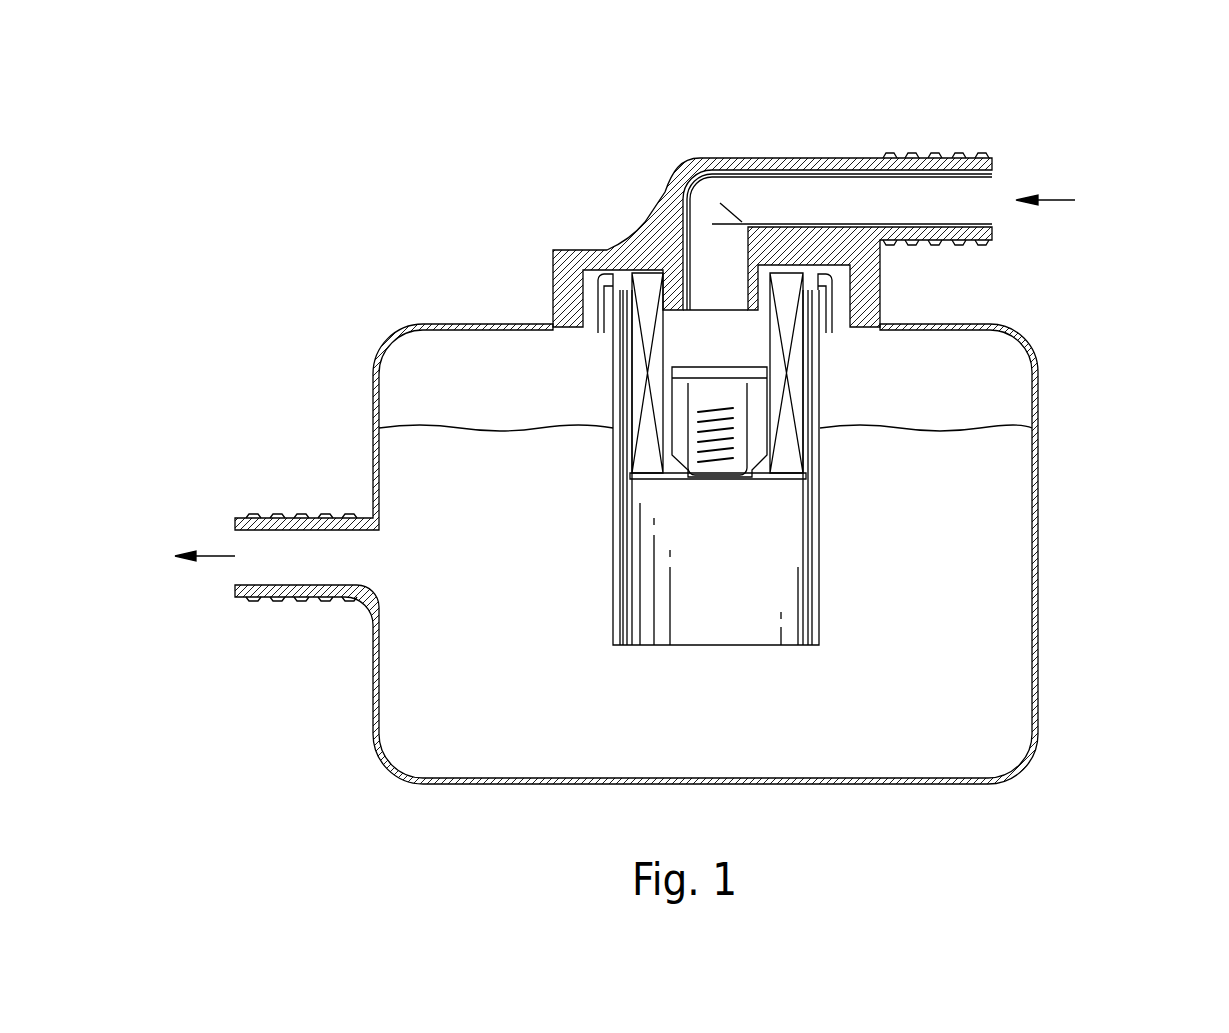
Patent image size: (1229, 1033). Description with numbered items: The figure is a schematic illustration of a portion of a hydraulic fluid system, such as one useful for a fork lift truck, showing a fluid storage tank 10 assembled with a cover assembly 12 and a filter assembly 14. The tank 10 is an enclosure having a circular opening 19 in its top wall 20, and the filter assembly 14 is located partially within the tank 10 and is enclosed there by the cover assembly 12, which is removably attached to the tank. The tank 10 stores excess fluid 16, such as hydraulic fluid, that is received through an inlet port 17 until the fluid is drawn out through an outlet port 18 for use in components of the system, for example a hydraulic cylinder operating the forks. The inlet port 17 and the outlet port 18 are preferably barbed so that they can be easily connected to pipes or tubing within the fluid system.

The fluid storage tank 10 is at (673, 410).
The cover assembly 12 is at (851, 110).
The filter assembly 14 is at (856, 571).
The excess fluid 16 is at (692, 719).
The inlet port 17 is at (962, 158).
The outlet port 18 is at (290, 518).
The circular opening 19 is at (612, 336).
The top wall 20 is at (463, 324).